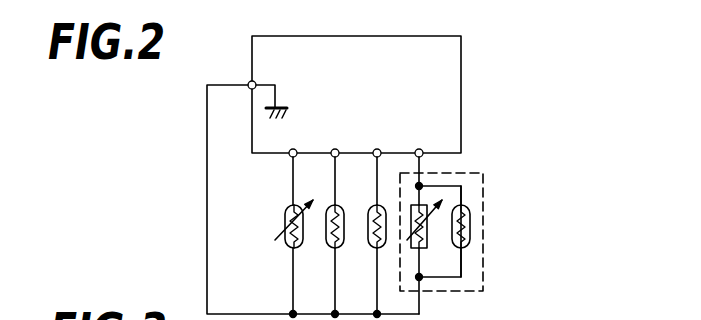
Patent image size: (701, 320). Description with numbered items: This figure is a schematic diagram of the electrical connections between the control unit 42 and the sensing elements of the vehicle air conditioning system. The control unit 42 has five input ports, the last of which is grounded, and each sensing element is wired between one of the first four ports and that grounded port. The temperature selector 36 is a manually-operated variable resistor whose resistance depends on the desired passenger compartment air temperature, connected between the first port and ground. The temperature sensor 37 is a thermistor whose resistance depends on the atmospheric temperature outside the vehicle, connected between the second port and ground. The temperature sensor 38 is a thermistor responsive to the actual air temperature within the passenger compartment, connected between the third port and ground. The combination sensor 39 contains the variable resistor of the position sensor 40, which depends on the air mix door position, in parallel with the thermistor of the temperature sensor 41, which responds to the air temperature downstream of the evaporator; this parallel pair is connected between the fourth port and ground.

The temperature selector 36 is at (289, 244).
The temperature sensor 37 is at (329, 242).
The temperature sensor 38 is at (368, 241).
The combination sensor 39 is at (478, 235).
The position sensor 40 is at (428, 241).
The temperature sensor 41 is at (467, 241).
The control unit 42 is at (461, 60).